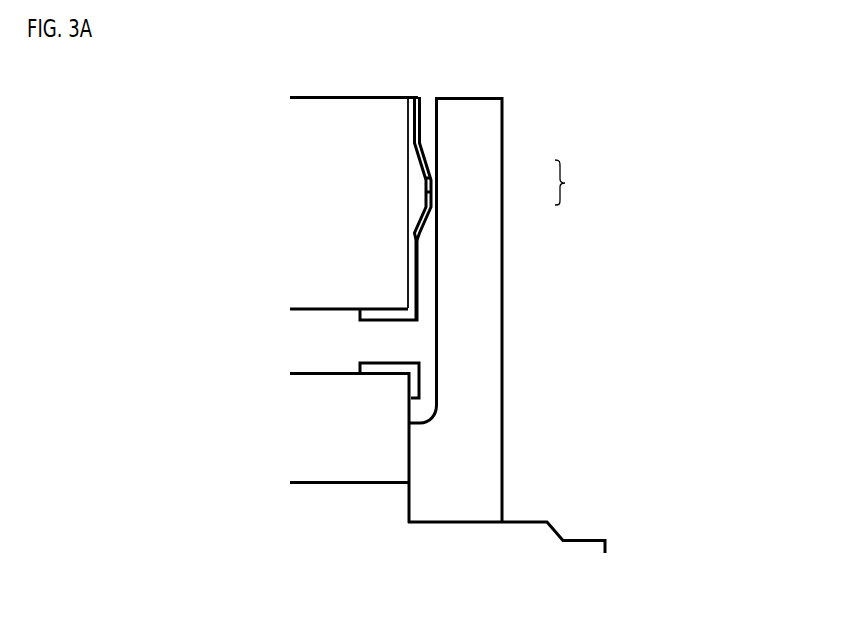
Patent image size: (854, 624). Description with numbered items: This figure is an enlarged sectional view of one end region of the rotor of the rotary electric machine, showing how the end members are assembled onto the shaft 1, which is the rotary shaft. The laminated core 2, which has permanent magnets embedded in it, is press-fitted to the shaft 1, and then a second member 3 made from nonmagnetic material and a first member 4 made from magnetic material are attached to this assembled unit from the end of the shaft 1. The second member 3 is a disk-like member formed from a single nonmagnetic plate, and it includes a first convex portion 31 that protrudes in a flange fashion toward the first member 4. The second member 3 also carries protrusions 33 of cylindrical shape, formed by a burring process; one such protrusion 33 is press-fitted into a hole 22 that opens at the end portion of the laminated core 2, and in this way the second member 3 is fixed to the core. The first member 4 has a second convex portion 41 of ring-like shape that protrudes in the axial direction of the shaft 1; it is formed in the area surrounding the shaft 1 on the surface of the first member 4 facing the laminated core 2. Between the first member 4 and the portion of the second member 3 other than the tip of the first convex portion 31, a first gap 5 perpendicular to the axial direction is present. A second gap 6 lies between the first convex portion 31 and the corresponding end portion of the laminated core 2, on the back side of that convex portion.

The shaft 1 is at (545, 550).
The laminated core 2 is at (325, 107).
The second member 3 is at (418, 107).
The first member 4 is at (483, 340).
The first gap 5 is at (430, 277).
The second gap 6 is at (422, 192).
The hole 22 is at (327, 372).
The first convex portion 31 is at (432, 180).
The protrusion 33 is at (358, 318).
The second convex portion 41 is at (420, 477).